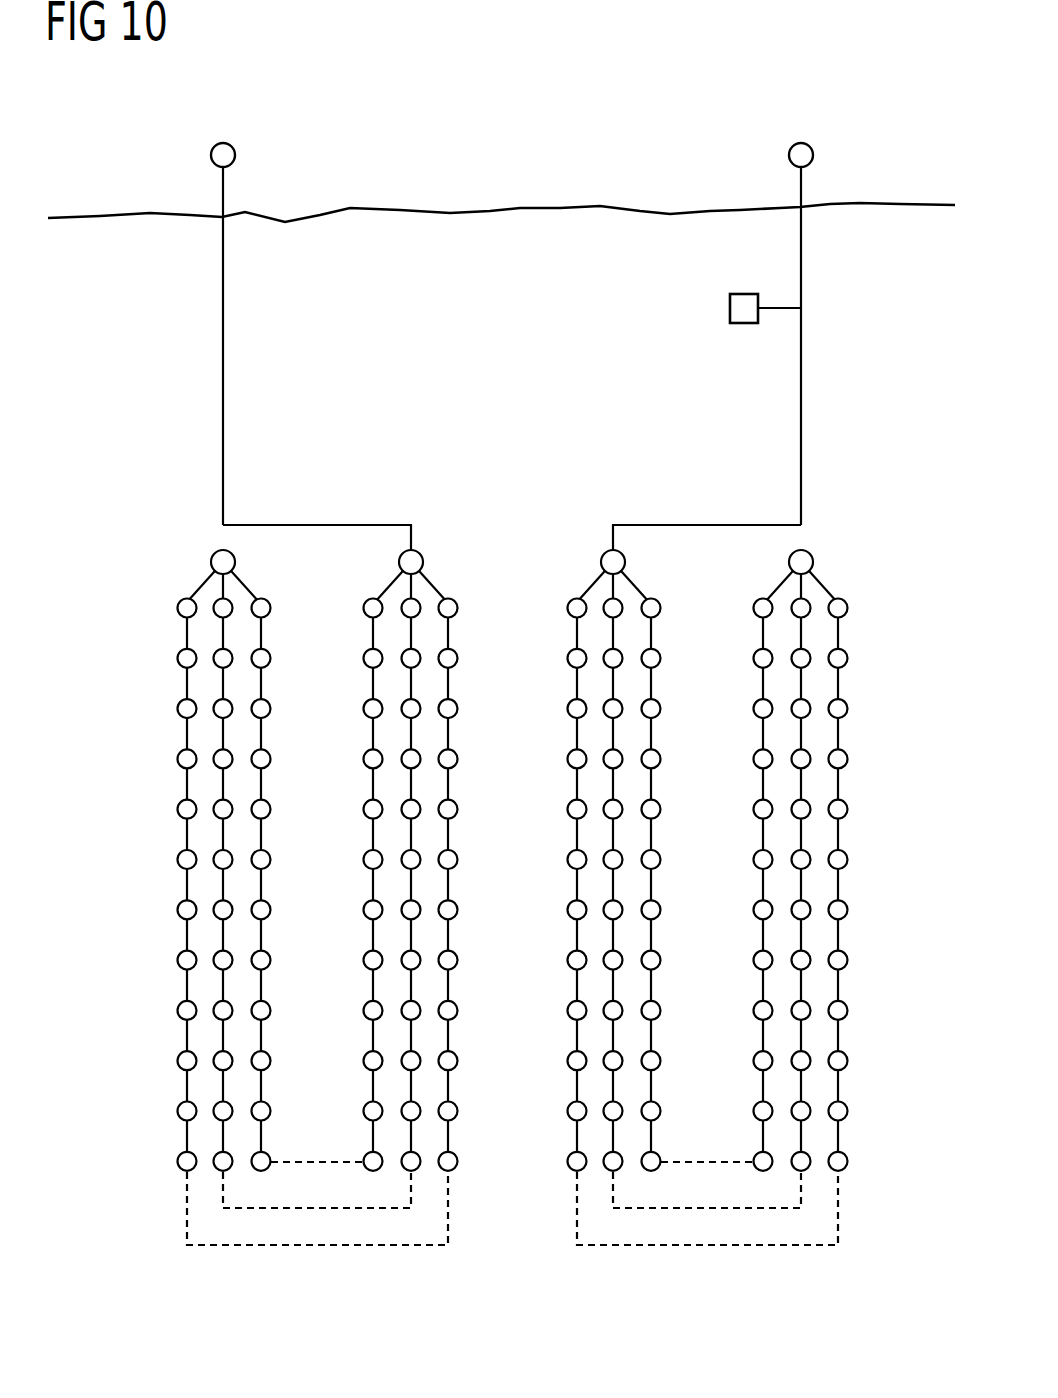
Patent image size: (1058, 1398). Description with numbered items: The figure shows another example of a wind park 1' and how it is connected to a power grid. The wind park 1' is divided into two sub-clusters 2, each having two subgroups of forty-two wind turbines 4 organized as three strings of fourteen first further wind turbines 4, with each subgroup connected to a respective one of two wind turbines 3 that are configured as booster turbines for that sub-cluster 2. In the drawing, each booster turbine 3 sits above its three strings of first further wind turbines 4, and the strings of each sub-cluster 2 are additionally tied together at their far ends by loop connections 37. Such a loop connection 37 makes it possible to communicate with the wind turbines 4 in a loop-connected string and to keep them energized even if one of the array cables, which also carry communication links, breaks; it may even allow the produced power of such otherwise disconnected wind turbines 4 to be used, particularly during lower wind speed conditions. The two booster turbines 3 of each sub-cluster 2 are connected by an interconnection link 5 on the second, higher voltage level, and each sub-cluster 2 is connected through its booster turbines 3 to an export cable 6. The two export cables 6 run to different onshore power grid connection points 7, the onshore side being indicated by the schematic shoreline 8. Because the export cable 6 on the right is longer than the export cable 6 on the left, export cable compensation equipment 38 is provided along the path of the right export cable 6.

The wind park 1' is at (501, 705).
The sub-cluster 2 is at (244, 1268).
The booster turbine 3 is at (210, 553).
The first further wind turbine 4 is at (177, 607).
The interconnection link 5 is at (308, 522).
The export cable 6 is at (222, 358).
The power grid connection point 7 is at (222, 143).
The shoreline 8 is at (458, 224).
The loop connection 37 is at (310, 1160).
The export cable compensation equipment 38 is at (729, 305).